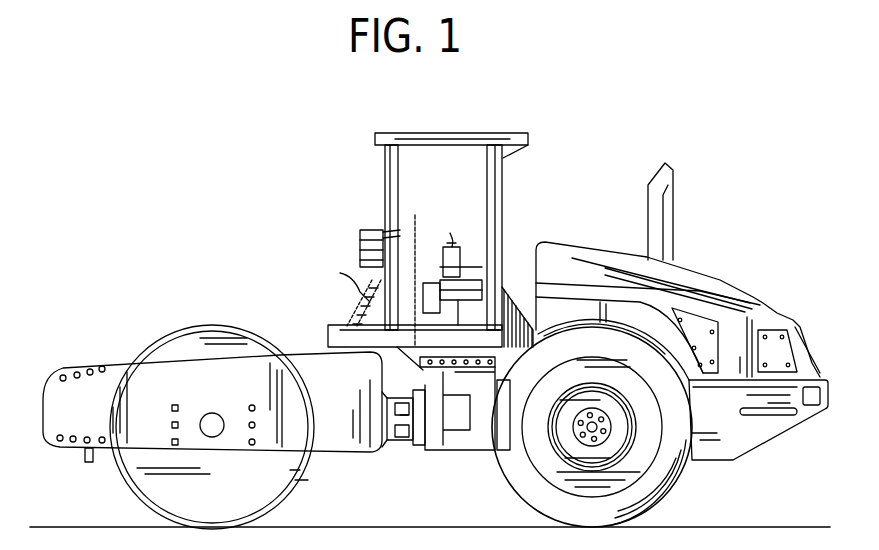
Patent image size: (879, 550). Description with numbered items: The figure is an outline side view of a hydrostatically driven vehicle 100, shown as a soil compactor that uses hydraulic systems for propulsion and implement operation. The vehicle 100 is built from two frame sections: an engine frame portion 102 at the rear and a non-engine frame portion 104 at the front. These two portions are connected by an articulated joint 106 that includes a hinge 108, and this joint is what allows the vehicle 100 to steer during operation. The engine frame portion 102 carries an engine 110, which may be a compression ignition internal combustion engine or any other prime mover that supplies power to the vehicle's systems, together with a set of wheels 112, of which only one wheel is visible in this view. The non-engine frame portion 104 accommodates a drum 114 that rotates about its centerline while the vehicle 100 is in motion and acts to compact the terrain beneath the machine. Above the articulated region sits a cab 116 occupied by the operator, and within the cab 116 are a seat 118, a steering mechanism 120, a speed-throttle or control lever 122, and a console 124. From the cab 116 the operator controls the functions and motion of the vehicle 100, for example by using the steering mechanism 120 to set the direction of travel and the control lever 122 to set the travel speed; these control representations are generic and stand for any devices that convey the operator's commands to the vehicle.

The hydrostatically driven vehicle 100 is at (175, 135).
The engine frame portion 102 is at (745, 424).
The non-engine frame portion 104 is at (340, 437).
The articulated joint 106 is at (403, 462).
The hinge 108 is at (433, 453).
The engine 110 is at (722, 281).
The set of wheels 112 is at (663, 493).
The drum 114 is at (208, 323).
The cab 116 is at (528, 106).
The seat 118 is at (468, 250).
The steering mechanism 120 is at (385, 222).
The control lever 122 is at (450, 232).
The console 124 is at (352, 298).